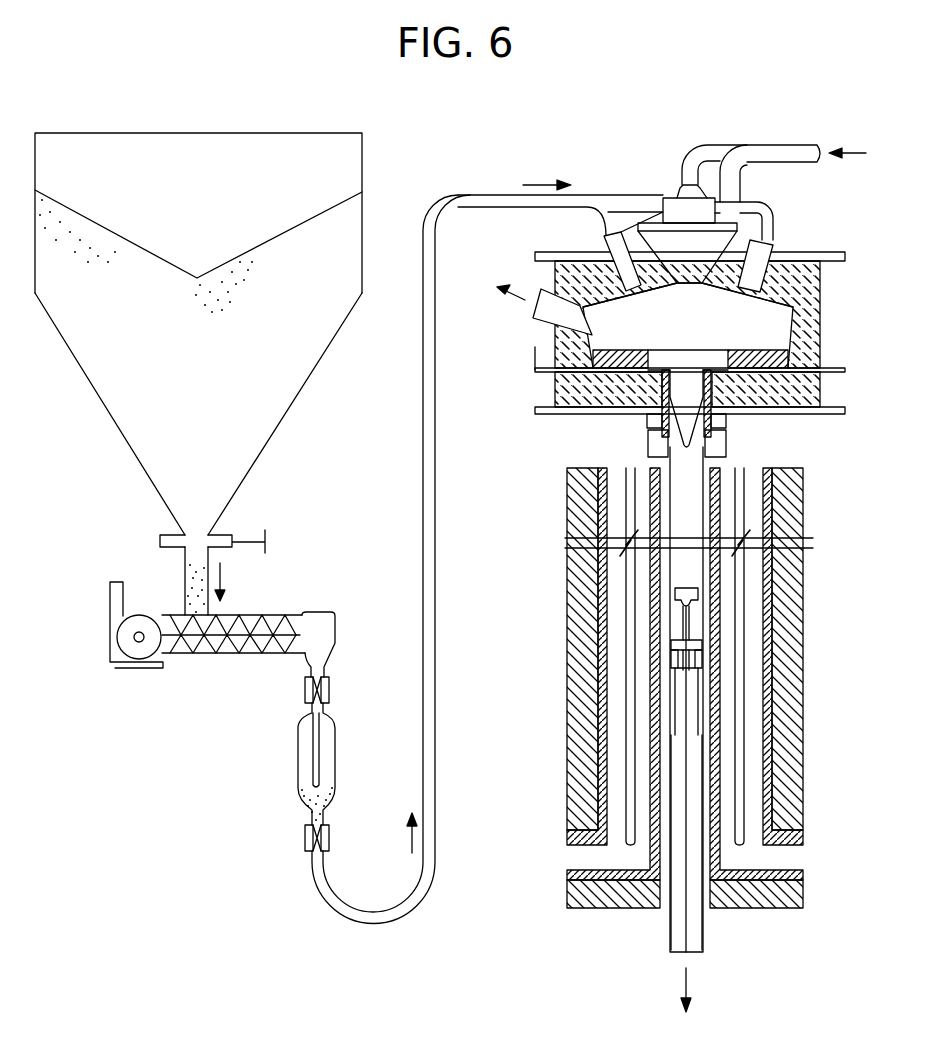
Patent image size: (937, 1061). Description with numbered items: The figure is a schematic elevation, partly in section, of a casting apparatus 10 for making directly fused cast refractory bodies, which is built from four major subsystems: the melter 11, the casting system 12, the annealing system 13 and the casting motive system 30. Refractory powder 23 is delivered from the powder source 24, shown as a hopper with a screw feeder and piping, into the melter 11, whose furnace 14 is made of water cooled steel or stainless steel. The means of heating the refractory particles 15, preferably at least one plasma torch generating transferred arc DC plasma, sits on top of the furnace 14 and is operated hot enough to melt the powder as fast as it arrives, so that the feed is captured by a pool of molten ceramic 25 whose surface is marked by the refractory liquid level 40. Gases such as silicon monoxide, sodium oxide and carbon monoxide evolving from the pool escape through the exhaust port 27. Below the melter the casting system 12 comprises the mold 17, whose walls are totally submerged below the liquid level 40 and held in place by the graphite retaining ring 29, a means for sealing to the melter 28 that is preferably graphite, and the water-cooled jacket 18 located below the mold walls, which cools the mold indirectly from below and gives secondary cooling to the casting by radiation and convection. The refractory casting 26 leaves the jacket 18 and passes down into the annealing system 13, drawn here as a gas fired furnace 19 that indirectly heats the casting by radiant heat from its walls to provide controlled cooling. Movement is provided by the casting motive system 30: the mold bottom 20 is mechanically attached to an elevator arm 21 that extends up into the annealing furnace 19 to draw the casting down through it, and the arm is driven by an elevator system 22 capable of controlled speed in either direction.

The casting apparatus 10 is at (793, 200).
The melter 11 is at (845, 180).
The casting system 12 is at (845, 350).
The annealing system 13 is at (682, 690).
The furnace 14 is at (822, 329).
The means of heating the refractory particles 15 is at (675, 200).
The mold 17 is at (664, 393).
The water-cooled jacket 18 is at (728, 441).
The furnace 19 is at (567, 826).
The mold bottom 20 is at (678, 613).
The elevator arm 21 is at (673, 658).
The elevator system 22 is at (673, 737).
The refractory powder 23 is at (489, 195).
The powder source 24 is at (103, 421).
The pool of molten ceramic 25 is at (672, 362).
The refractory casting 26 is at (668, 463).
The exhaust port 27 is at (541, 306).
The means for sealing to the melter 28 is at (597, 352).
The graphite retaining ring 29 is at (662, 388).
The casting motive system 30 is at (668, 642).
The refractory liquid level 40 is at (698, 352).